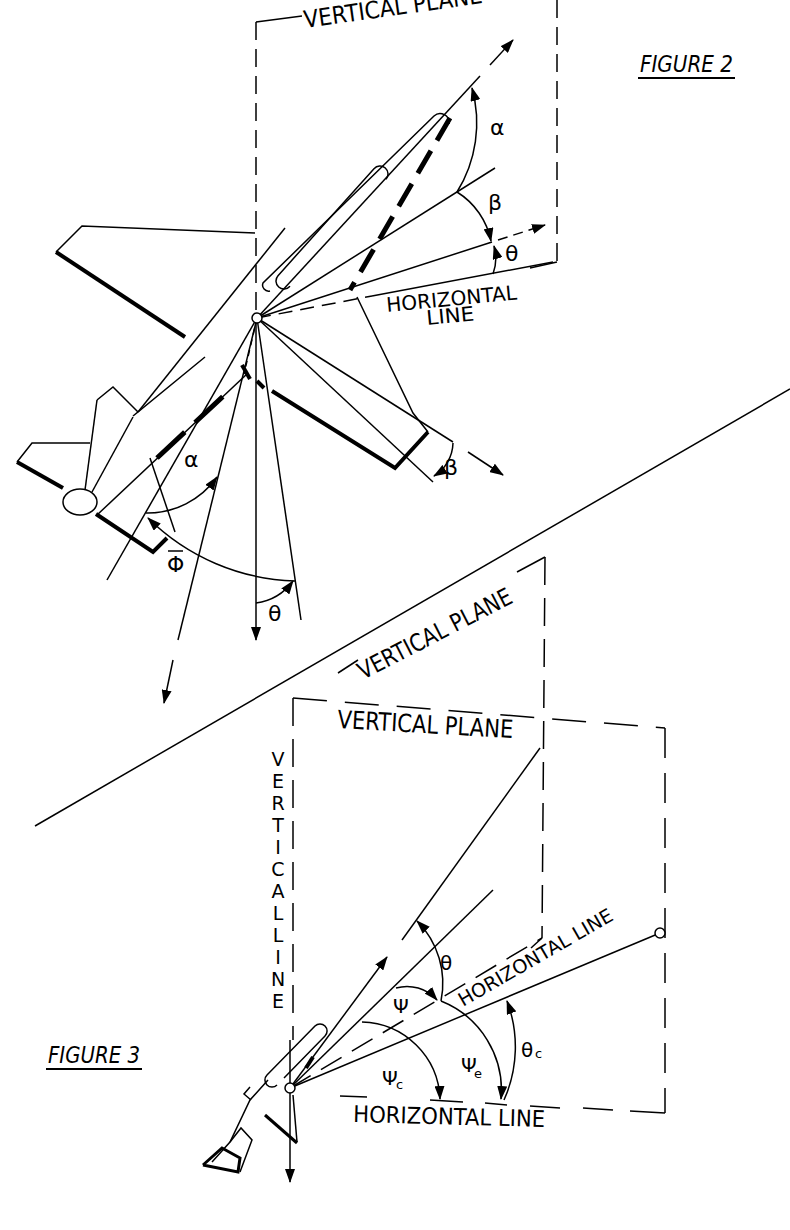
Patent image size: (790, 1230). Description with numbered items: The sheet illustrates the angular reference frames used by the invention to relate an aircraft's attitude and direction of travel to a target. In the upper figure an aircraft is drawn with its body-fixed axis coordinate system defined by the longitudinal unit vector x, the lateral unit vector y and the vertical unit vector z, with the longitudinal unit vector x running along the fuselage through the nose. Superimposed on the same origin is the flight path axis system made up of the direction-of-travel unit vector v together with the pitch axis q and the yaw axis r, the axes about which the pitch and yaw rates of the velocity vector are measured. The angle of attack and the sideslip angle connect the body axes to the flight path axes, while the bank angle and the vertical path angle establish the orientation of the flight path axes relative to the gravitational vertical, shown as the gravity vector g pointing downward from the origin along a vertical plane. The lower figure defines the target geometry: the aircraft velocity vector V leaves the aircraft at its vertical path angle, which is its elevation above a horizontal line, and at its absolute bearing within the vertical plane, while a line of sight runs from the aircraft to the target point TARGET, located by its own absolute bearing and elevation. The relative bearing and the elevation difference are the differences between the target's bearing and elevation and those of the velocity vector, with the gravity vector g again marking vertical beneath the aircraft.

In FIG. 2, the body-fixed longitudinal axis unit vector x is at (512, 15).
In FIG. 2, the flight path direction-of-travel unit vector v is at (541, 206).
In FIG. 2, the body-fixed lateral axis unit vector y is at (522, 470).
In FIG. 2, the flight path pitch axis unit vector q is at (449, 490).
In FIG. 2, the body-fixed vertical axis unit vector z is at (152, 692).
In FIG. 2, the gravity vector g is at (247, 626).
In FIG. 3, the gravity vector g is at (295, 1187).
In FIG. 2, the flight path yaw axis unit vector r is at (109, 589).
In FIG. 3, the aircraft velocity vector V is at (415, 918).
In FIG. 3, the target point TARGET is at (520, 1004).